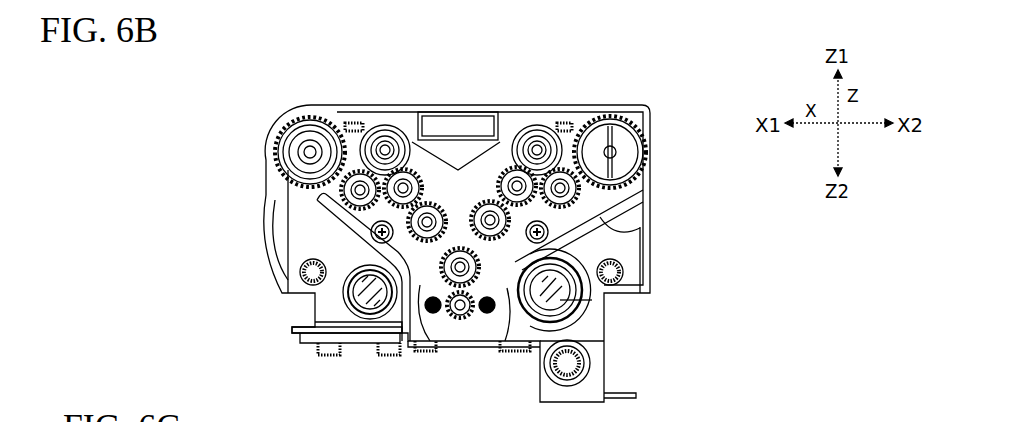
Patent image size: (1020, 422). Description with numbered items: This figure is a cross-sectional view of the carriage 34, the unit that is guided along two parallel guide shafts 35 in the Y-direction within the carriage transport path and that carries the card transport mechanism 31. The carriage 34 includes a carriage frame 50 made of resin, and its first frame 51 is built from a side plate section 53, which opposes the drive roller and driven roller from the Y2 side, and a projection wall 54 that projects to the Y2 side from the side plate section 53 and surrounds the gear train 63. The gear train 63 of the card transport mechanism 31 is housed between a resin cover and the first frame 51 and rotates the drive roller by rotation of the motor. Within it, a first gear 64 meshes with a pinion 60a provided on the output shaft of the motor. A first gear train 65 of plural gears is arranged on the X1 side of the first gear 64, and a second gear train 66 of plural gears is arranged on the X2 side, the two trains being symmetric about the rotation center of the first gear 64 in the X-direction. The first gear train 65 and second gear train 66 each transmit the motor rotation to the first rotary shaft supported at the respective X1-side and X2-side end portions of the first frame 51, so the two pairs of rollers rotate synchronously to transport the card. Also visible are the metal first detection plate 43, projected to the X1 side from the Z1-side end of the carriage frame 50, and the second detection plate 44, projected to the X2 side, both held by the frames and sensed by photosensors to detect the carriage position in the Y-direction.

The carriage 34 is at (262, 101).
The first frame 51 is at (460, 111).
The carriage frame 50 is at (433, 50).
The projection wall 54 is at (384, 104).
The side plate section 53 is at (416, 104).
The gear train 63 is at (473, 161).
The card transport mechanism 31 is at (458, 193).
The first gear train 65 is at (300, 242).
The second gear train 66 is at (645, 242).
The guide shaft 35 is at (608, 312).
The first detection plate 43 is at (291, 334).
The first gear 64 is at (425, 330).
The pinion 60a is at (468, 320).
The second detection plate 44 is at (624, 392).